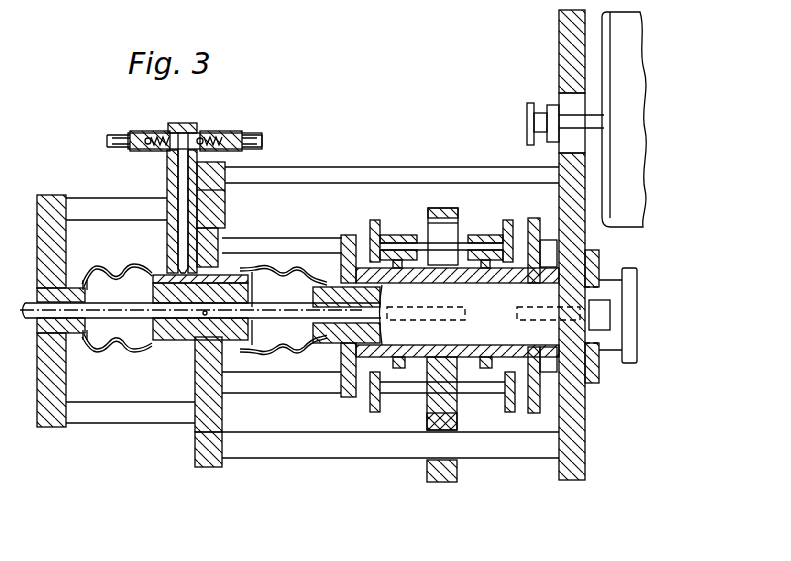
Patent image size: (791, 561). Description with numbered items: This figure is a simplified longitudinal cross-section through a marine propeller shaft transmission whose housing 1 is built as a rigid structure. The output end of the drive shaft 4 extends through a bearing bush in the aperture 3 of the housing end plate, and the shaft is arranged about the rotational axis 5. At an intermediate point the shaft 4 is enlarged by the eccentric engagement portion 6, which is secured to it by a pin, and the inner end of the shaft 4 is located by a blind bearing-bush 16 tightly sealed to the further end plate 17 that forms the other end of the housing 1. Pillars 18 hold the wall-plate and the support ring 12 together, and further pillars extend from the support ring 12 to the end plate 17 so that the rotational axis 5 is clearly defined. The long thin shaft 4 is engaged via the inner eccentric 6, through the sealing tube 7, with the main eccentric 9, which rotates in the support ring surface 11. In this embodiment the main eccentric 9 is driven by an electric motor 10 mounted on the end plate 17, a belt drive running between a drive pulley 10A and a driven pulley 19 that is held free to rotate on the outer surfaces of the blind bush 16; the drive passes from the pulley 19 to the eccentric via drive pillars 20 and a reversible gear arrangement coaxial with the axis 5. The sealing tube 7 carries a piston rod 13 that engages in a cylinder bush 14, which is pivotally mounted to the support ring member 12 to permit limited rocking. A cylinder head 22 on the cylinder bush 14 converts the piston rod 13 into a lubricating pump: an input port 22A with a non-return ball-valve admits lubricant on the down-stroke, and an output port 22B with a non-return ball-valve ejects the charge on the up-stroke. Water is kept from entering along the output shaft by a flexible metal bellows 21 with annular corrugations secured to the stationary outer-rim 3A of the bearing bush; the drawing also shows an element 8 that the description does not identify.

The housing 1 is at (358, 123).
The aperture 3 is at (87, 336).
The stationary outer-rim of the bearing bush 3A is at (80, 272).
The drive shaft 4 is at (127, 350).
The rotational axis 5 is at (135, 298).
The eccentric engagement portion 6 is at (171, 268).
The sealing tube 7 is at (163, 340).
The collar 8 is at (197, 368).
The main eccentric 9 is at (212, 402).
The electric motor 10 is at (623, 52).
The drive pulley 10A is at (527, 106).
The support ring surface 11 is at (213, 226).
The support ring 12 is at (213, 462).
The piston rod 13 is at (183, 165).
The cylinder bush 14 is at (167, 186).
The blind bearing-bush 16 is at (341, 372).
The end plate 17 is at (568, 72).
The pillars 18 is at (78, 200).
The driven pulley 19 is at (548, 413).
The drive pillars 20 is at (290, 243).
The bellows 21 is at (137, 362).
The cylinder head 22 is at (186, 124).
The input port 22A is at (157, 125).
The output port 22B is at (213, 125).